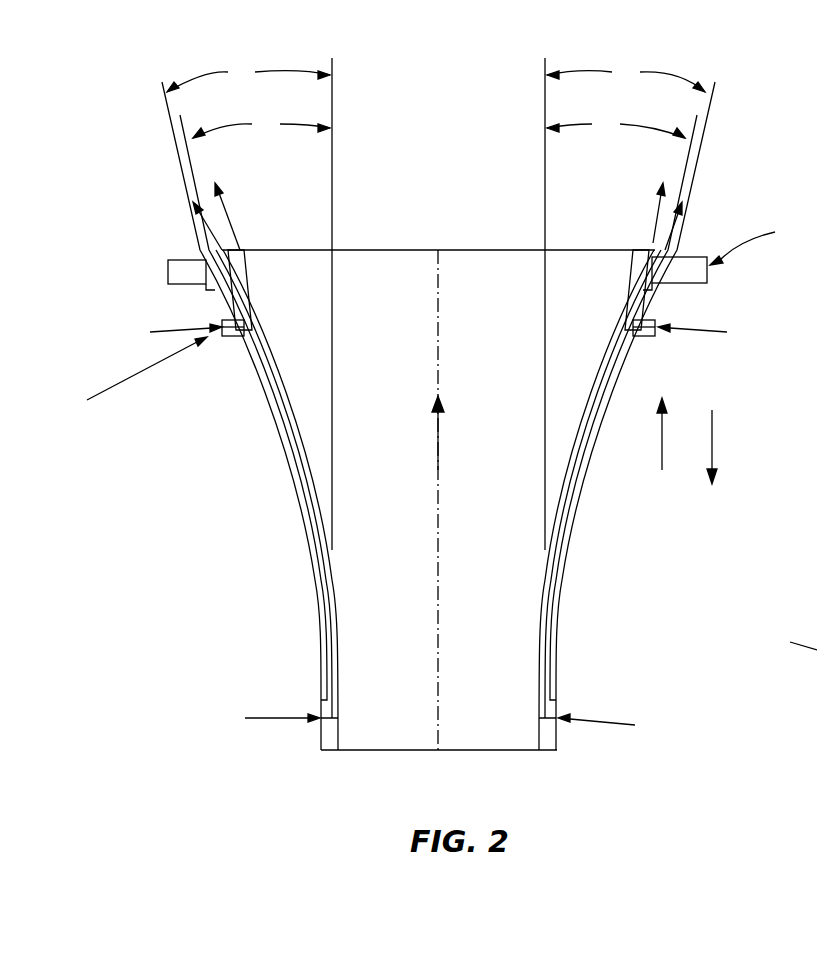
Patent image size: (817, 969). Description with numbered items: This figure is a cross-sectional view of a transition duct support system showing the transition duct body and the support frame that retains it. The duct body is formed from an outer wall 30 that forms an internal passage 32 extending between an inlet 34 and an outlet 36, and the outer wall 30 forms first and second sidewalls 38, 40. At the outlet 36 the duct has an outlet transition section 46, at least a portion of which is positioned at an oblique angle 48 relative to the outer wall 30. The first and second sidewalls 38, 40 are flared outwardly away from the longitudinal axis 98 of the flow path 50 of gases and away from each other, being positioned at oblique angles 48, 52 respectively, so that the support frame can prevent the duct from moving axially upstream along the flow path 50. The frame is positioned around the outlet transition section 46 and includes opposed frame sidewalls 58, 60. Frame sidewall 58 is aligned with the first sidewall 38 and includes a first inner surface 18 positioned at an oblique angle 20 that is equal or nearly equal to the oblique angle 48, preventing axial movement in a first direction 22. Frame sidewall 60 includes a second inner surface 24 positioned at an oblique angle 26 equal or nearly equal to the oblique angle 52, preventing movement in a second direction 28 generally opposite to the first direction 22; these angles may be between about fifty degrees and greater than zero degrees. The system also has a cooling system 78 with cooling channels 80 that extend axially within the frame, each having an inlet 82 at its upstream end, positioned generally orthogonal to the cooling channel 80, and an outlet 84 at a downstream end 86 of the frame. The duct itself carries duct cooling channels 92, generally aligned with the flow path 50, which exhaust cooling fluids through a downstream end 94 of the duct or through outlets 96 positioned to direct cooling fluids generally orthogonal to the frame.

The first inner surface 18 is at (262, 250).
The oblique angle 20 is at (248, 76).
The first direction 22 is at (712, 438).
The second inner surface 24 is at (637, 292).
The oblique angle 26 is at (626, 76).
The second direction 28 is at (662, 435).
The outer wall 30 is at (318, 630).
The internal passage 32 is at (393, 290).
The inlet 34 is at (378, 752).
The outlet 36 is at (470, 250).
The first sidewall 38 is at (250, 348).
The second sidewall 40 is at (620, 353).
The outlet transition section 46 is at (303, 553).
The oblique angle 48 is at (261, 128).
The flow path 50 is at (438, 470).
The oblique angle 52 is at (616, 128).
The frame sidewall 58 is at (238, 296).
The frame sidewall 60 is at (662, 303).
The cooling system 78 is at (430, 316).
The cooling channel 80 is at (230, 313).
The inlet 82 is at (227, 338).
The outlet 84 is at (210, 248).
The downstream end 86 is at (205, 252).
The duct cooling channel 92 is at (318, 567).
The downstream end 94 is at (240, 250).
The outlet 96 is at (228, 250).
The longitudinal axis 98 is at (438, 587).